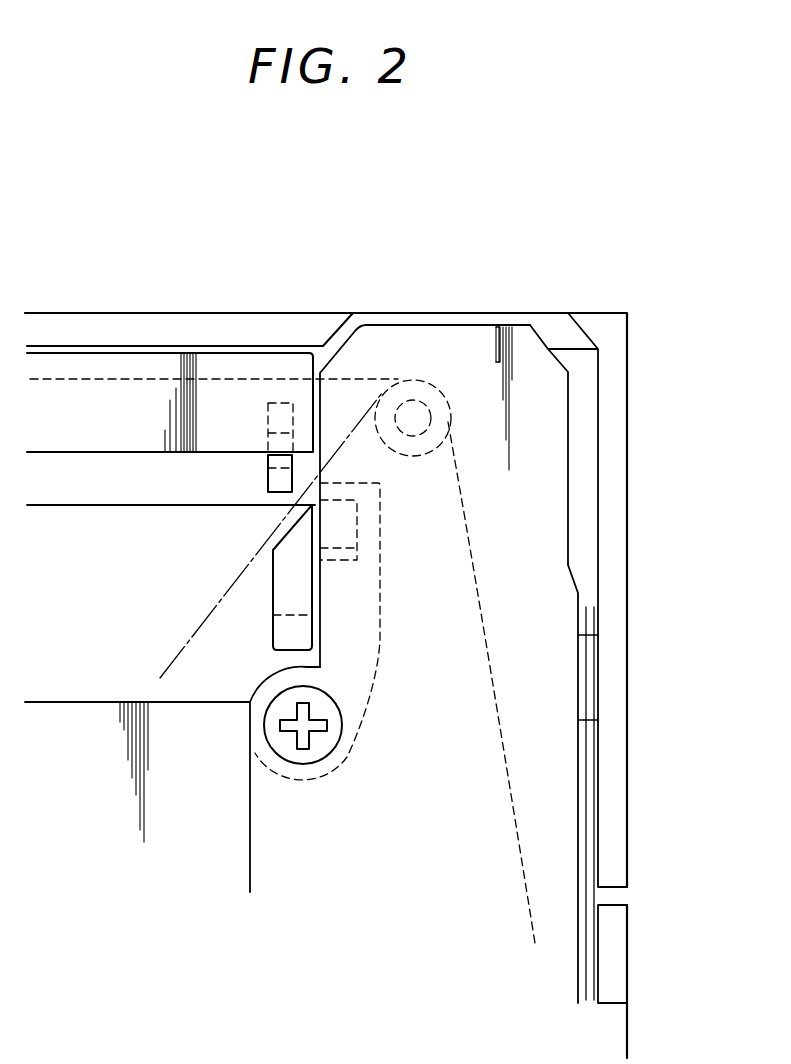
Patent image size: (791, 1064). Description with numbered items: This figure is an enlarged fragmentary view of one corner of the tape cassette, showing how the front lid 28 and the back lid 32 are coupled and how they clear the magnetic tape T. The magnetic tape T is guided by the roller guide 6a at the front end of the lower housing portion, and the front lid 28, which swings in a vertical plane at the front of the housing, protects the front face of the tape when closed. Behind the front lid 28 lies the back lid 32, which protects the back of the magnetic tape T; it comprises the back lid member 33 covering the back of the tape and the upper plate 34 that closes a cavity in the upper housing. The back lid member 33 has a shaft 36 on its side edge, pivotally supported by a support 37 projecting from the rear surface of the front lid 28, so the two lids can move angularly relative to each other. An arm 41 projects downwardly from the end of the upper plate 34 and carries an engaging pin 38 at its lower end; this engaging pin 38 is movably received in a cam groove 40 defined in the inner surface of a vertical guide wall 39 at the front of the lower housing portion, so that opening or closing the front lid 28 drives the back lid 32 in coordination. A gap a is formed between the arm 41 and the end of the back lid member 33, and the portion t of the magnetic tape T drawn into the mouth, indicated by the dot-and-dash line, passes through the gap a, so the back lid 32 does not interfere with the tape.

The front lid 28 is at (506, 312).
The back lid 32 is at (61, 347).
The back lid member 33 is at (153, 408).
The upper plate 34 is at (93, 522).
The shaft 36 is at (300, 460).
The support 37 is at (272, 480).
The engaging pin 38 is at (355, 530).
The vertical guide wall 39 is at (380, 500).
The cam groove 40 is at (338, 552).
The arm 41 is at (302, 587).
The roller guide 6a is at (420, 378).
The magnetic tape T is at (255, 376).
The gap a is at (285, 507).
The portion of magnetic tape t is at (210, 612).